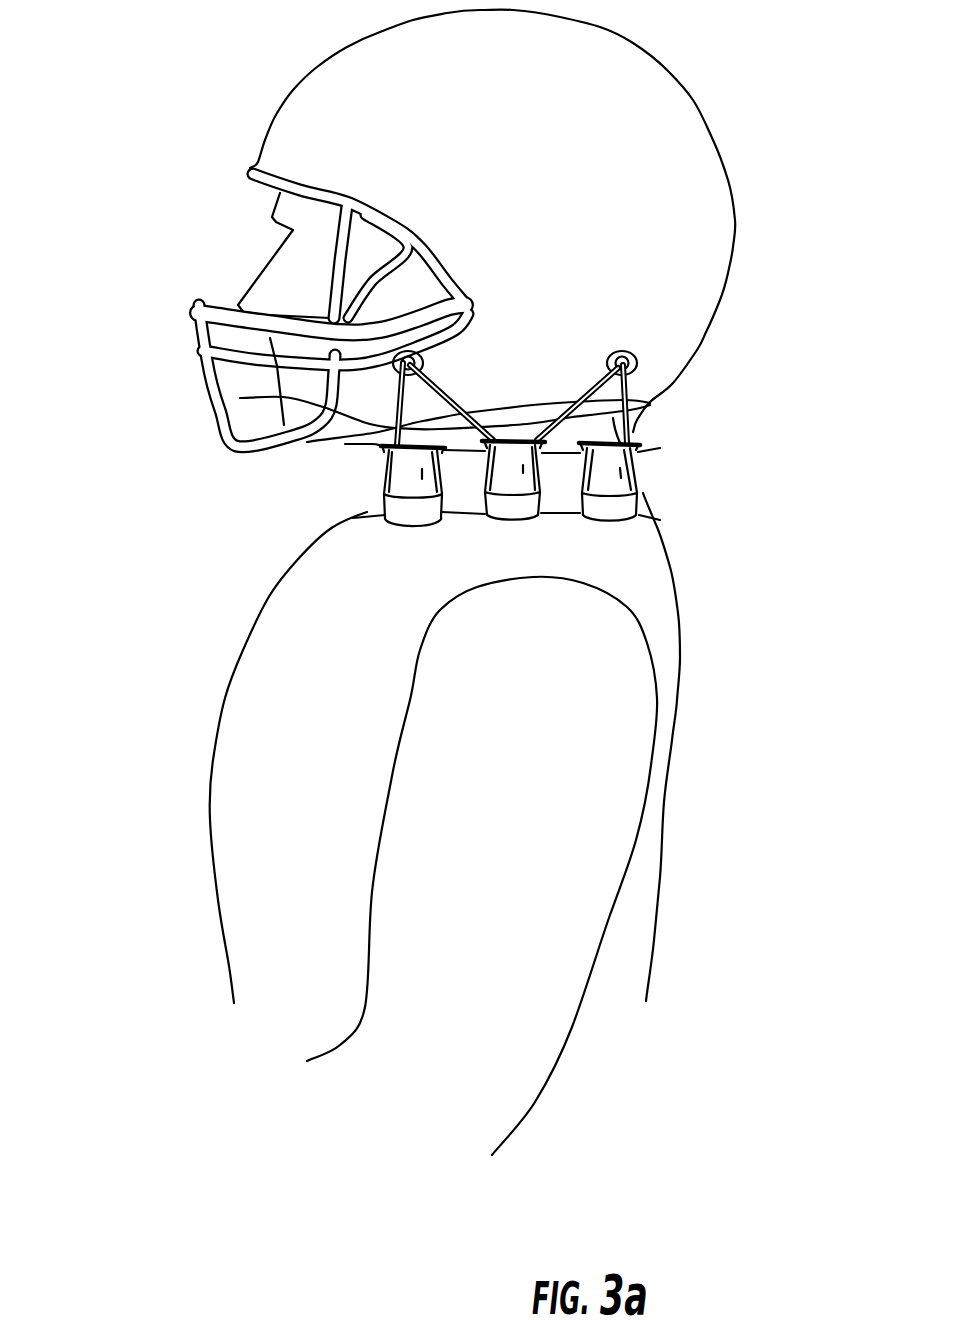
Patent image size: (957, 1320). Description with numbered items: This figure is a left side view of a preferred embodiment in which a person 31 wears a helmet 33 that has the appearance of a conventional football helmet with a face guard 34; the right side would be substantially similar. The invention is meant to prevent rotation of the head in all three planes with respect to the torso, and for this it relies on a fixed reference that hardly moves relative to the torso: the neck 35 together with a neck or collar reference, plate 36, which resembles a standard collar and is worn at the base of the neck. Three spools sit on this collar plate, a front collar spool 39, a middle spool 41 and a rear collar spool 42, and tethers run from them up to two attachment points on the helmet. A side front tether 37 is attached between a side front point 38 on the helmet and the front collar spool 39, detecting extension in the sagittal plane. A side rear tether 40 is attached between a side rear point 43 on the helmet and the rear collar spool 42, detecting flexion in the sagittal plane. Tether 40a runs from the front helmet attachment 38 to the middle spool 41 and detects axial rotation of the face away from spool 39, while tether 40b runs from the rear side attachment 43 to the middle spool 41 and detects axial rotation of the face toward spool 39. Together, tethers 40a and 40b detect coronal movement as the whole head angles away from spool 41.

The person 31 is at (217, 677).
The helmet 33 is at (570, 158).
The face guard 34 is at (192, 336).
The neck 35 is at (513, 538).
The plate 36 is at (557, 483).
The side front tether 37 is at (240, 398).
The side front point 38 is at (430, 350).
The front collar spool 39 is at (427, 505).
The side rear tether 40 is at (640, 432).
The tether 40a is at (461, 410).
The tether 40b is at (597, 385).
The middle spool 41 is at (512, 520).
The rear collar spool 42 is at (602, 507).
The side rear point 43 is at (632, 350).